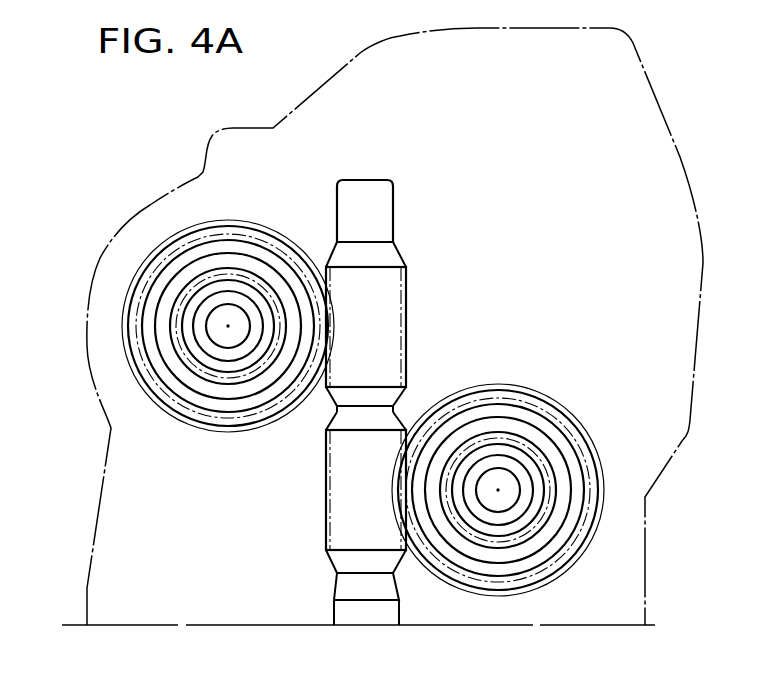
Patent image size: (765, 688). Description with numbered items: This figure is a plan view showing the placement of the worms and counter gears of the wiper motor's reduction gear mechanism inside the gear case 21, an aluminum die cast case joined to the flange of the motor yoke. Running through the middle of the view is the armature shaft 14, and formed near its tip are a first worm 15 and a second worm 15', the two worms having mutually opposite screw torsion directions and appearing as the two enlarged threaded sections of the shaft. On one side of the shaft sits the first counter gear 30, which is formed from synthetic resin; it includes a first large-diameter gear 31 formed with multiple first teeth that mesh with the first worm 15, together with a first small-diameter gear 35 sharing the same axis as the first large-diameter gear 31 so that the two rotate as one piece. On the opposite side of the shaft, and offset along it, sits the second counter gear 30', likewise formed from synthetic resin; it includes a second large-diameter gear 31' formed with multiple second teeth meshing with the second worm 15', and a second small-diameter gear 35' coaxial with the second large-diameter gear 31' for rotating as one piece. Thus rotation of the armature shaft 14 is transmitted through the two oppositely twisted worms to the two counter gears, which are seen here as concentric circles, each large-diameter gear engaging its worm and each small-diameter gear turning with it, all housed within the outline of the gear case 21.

The armature shaft 14 is at (363, 178).
The first worm 15 is at (394, 327).
The second worm 15' is at (332, 490).
The gear case 21 is at (118, 232).
The first counter gear 30 is at (228, 276).
The second counter gear 30' is at (498, 436).
The first large-diameter gear 31 is at (228, 300).
The second large-diameter gear 31' is at (504, 467).
The first small-diameter gear 35 is at (228, 384).
The second small-diameter gear 35' is at (533, 533).